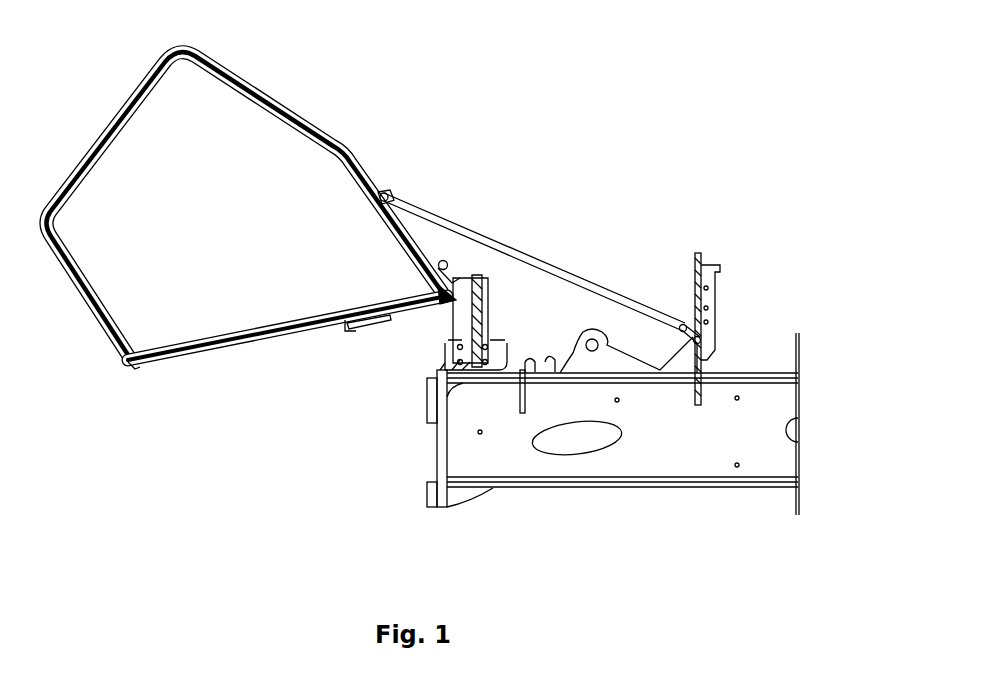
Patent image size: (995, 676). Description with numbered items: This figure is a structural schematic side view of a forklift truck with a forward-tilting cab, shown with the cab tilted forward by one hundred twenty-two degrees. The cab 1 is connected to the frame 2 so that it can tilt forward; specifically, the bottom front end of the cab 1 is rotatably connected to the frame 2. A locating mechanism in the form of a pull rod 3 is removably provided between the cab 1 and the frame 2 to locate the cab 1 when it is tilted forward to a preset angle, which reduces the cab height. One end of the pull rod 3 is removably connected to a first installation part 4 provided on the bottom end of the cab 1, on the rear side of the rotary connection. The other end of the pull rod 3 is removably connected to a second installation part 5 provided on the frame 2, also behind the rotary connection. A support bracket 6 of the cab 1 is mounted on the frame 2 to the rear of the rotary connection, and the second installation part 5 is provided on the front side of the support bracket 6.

The cab 1 is at (280, 104).
The frame 2 is at (660, 450).
The pull rod 3 is at (530, 255).
The first installation part 4 is at (386, 195).
The second installation part 5 is at (703, 338).
The support bracket 6 is at (716, 292).